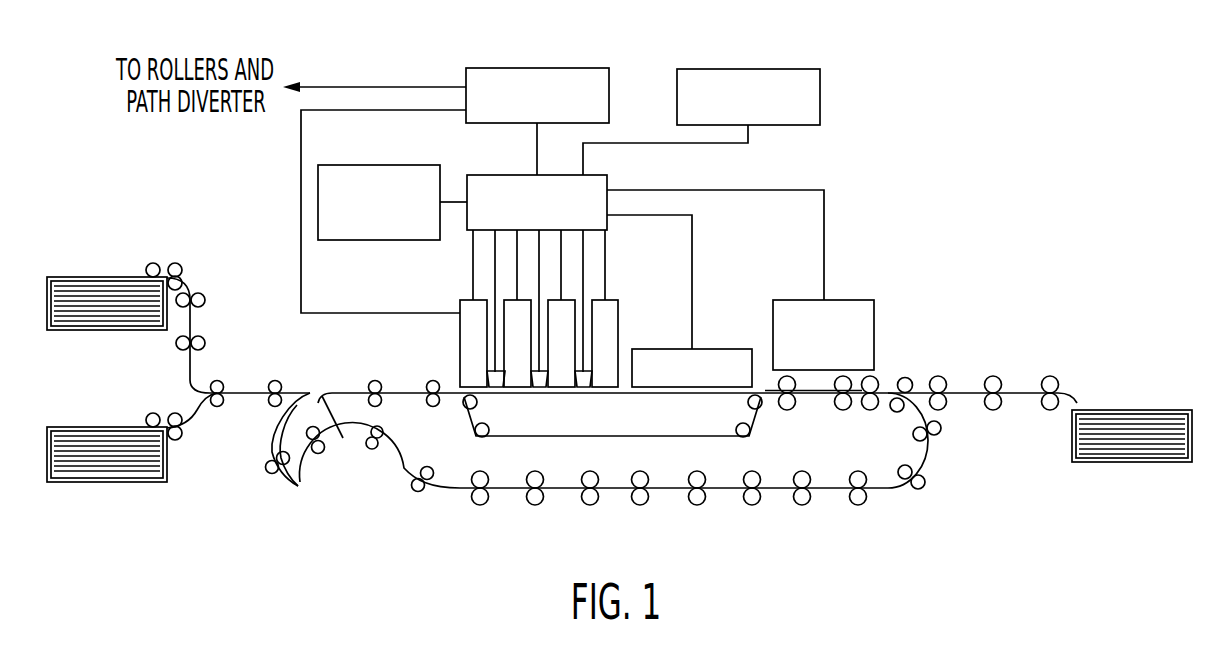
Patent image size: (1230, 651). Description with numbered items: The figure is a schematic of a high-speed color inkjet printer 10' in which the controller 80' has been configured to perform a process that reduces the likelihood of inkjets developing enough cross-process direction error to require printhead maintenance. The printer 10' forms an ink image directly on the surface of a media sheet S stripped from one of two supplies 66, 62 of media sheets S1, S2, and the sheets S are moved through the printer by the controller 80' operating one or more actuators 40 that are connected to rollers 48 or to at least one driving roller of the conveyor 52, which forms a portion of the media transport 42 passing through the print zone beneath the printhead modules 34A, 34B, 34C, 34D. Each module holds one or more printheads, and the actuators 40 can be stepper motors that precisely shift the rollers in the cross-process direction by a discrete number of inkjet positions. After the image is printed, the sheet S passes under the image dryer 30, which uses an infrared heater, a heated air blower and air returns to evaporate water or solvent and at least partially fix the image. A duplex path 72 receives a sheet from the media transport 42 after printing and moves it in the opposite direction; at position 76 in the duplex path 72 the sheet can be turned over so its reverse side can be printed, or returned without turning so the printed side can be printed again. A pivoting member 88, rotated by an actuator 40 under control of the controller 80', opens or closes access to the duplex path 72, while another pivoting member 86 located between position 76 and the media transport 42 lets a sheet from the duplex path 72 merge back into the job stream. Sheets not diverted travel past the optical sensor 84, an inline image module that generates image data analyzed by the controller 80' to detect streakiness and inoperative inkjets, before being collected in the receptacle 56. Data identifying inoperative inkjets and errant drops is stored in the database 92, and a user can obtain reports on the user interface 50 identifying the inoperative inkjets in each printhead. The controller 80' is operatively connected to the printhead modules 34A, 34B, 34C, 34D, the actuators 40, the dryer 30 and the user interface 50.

The high-speed color inkjet printer 10' is at (622, 272).
The image dryer 30 is at (712, 349).
The printhead module 34A is at (460, 330).
The printhead module 34B is at (497, 300).
The printhead module 34C is at (573, 300).
The printhead module 34D is at (618, 317).
The actuators 40 is at (547, 68).
The media transport 42 is at (915, 368).
The rollers 48 is at (903, 472).
The user interface 50 is at (318, 200).
The conveyor 52 is at (750, 456).
The receptacle 56 is at (1137, 462).
The second media supply tray 62 is at (113, 482).
The first media supply tray 66 is at (113, 330).
The duplex path 72 is at (824, 500).
The position in the duplex path 76 is at (284, 492).
The controller 80' is at (629, 257).
The optical sensor 84 is at (862, 300).
The pivoting member 86 is at (380, 455).
The pivoting member 88 is at (924, 397).
The database 92 is at (742, 69).
The media sheet S is at (381, 380).
The supply of media sheets S1 is at (100, 277).
The supply of media sheets S2 is at (100, 427).